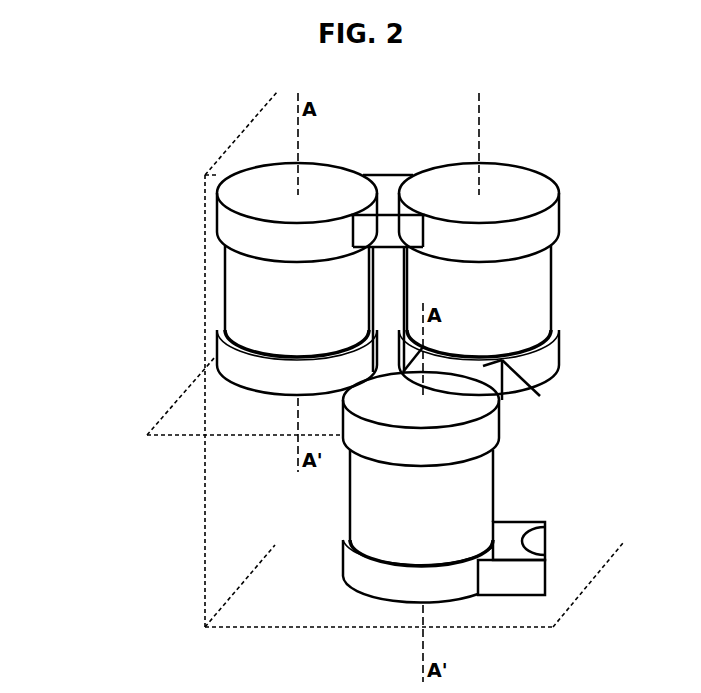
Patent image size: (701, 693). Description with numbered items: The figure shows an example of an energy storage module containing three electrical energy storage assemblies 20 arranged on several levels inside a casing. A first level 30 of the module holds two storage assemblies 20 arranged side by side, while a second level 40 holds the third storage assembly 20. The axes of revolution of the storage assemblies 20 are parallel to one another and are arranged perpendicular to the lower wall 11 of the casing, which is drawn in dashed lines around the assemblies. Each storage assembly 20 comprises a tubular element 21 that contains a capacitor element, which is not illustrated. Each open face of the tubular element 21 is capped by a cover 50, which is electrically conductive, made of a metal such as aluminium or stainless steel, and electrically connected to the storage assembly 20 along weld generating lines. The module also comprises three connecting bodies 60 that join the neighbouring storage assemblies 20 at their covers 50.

The lower wall 11 is at (288, 607).
The electrical energy storage assembly 20 is at (388, 366).
The tubular element 21 is at (232, 302).
The first level 30 is at (134, 165).
The second level 40 is at (66, 372).
The cover 50 is at (336, 182).
The connecting body 60 is at (388, 182).